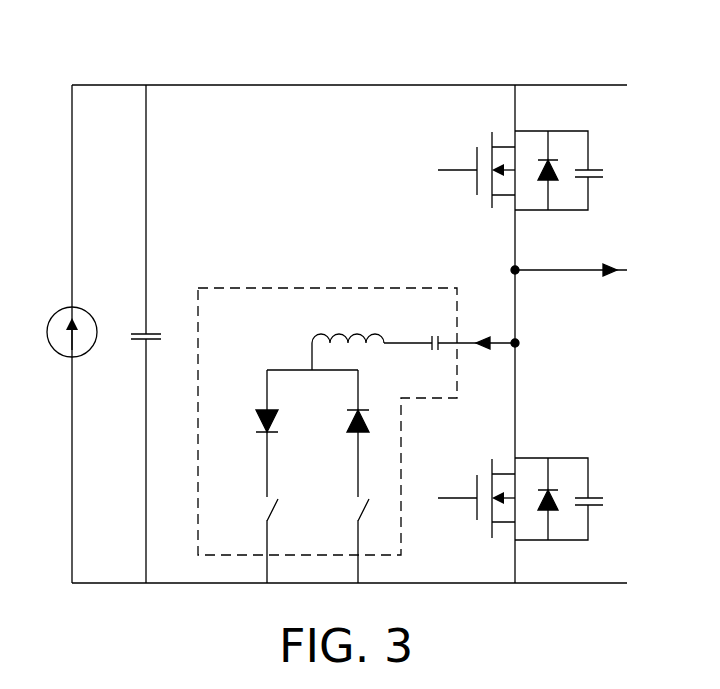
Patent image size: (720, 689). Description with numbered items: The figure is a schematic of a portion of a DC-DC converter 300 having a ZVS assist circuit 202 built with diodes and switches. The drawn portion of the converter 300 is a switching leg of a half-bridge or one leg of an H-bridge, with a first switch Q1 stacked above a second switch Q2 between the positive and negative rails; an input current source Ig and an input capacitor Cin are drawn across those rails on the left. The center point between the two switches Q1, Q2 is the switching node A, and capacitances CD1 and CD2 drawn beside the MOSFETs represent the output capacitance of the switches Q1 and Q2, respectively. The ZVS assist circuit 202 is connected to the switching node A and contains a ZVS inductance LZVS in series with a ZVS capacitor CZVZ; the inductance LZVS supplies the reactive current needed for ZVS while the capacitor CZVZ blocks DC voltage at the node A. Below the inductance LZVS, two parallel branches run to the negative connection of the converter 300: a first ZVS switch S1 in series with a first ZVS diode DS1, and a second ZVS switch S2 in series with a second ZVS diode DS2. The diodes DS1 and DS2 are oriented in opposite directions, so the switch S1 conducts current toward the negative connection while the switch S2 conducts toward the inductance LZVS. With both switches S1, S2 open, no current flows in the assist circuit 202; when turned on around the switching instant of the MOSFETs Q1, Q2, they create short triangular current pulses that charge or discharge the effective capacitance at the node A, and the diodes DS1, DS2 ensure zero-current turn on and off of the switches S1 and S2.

The DC-DC converter 300 is at (112, 60).
The ZVS assist circuit 202 is at (327, 417).
The first switch Q1 is at (495, 170).
The second switch Q2 is at (495, 499).
The capacitance CD1 is at (586, 170).
The capacitance CD2 is at (586, 499).
The input capacitor Cin is at (153, 334).
The input current source Ig is at (75, 316).
The ZVS inductance LZVS is at (348, 327).
The ZVS capacitor CZVZ is at (427, 329).
The first ZVS diode DS1 is at (253, 433).
The second ZVS diode DS2 is at (342, 433).
The first ZVS switch S1 is at (258, 540).
The second ZVS switch S2 is at (349, 540).
The switching node A is at (526, 344).